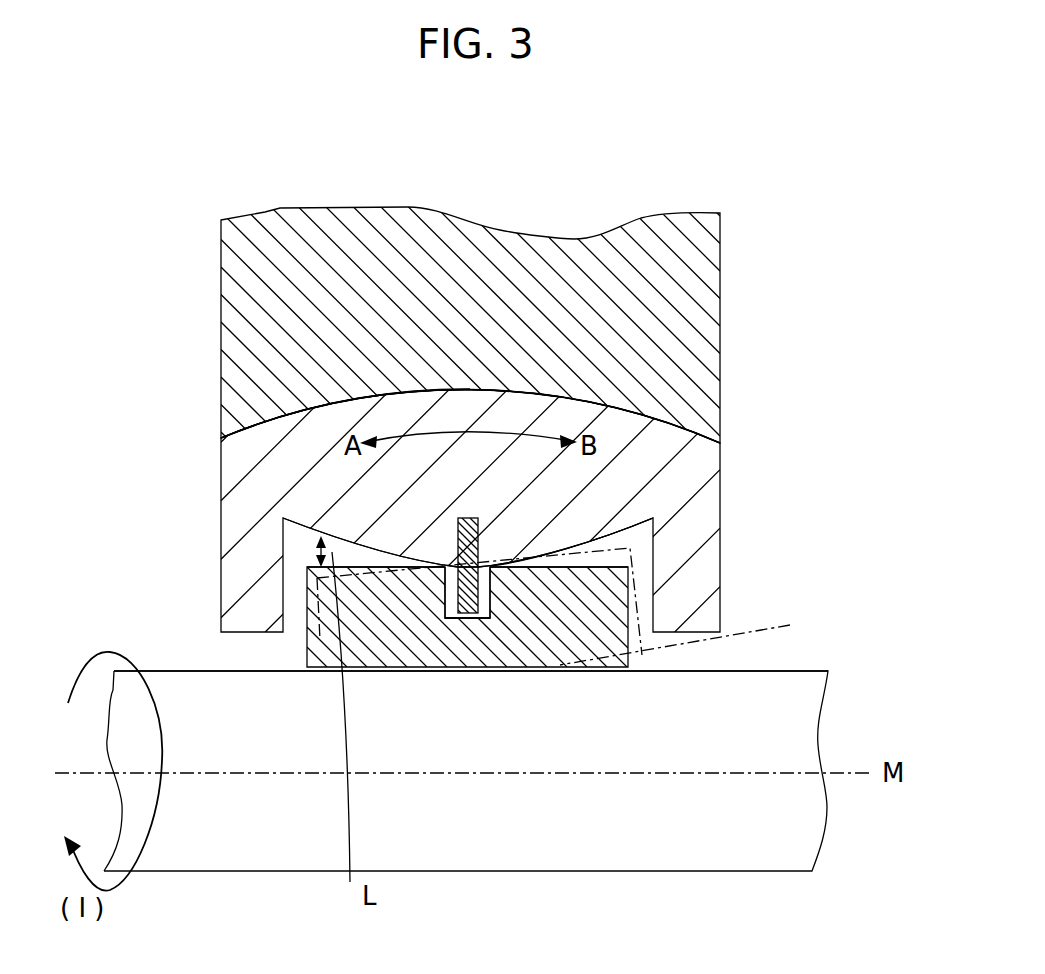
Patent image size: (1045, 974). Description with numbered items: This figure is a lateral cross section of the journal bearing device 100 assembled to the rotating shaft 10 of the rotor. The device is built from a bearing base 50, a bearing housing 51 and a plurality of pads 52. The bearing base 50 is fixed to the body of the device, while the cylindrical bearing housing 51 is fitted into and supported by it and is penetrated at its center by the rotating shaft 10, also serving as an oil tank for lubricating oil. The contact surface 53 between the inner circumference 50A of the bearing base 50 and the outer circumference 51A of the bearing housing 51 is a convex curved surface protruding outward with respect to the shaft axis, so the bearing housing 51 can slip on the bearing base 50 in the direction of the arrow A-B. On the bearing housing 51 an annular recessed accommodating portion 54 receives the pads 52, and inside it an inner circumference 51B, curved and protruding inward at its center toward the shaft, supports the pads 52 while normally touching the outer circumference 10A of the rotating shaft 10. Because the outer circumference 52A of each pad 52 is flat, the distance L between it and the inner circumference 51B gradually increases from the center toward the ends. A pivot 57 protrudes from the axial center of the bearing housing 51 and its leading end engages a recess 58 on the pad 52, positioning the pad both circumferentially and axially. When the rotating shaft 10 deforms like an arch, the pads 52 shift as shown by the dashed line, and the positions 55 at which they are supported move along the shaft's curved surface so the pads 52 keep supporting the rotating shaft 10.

The journal bearing device 100 is at (716, 152).
The bearing base 50 is at (708, 320).
The inner circumference of the bearing base 50A is at (678, 425).
The bearing housing 51 is at (245, 486).
The outer circumference of the bearing housing 51A is at (672, 413).
The inner circumference of the bearing housing 51B is at (625, 533).
The pad 52 is at (307, 612).
The outer circumference of the pad 52A is at (575, 558).
The contact surface 53 is at (262, 420).
The accommodating portion 54 is at (566, 548).
The positions at which the pads are supported 55 is at (449, 608).
The pivot 57 is at (463, 614).
The recess 58 is at (481, 613).
The rotating shaft 10 is at (786, 728).
The outer circumference of the rotating shaft 10A is at (770, 671).